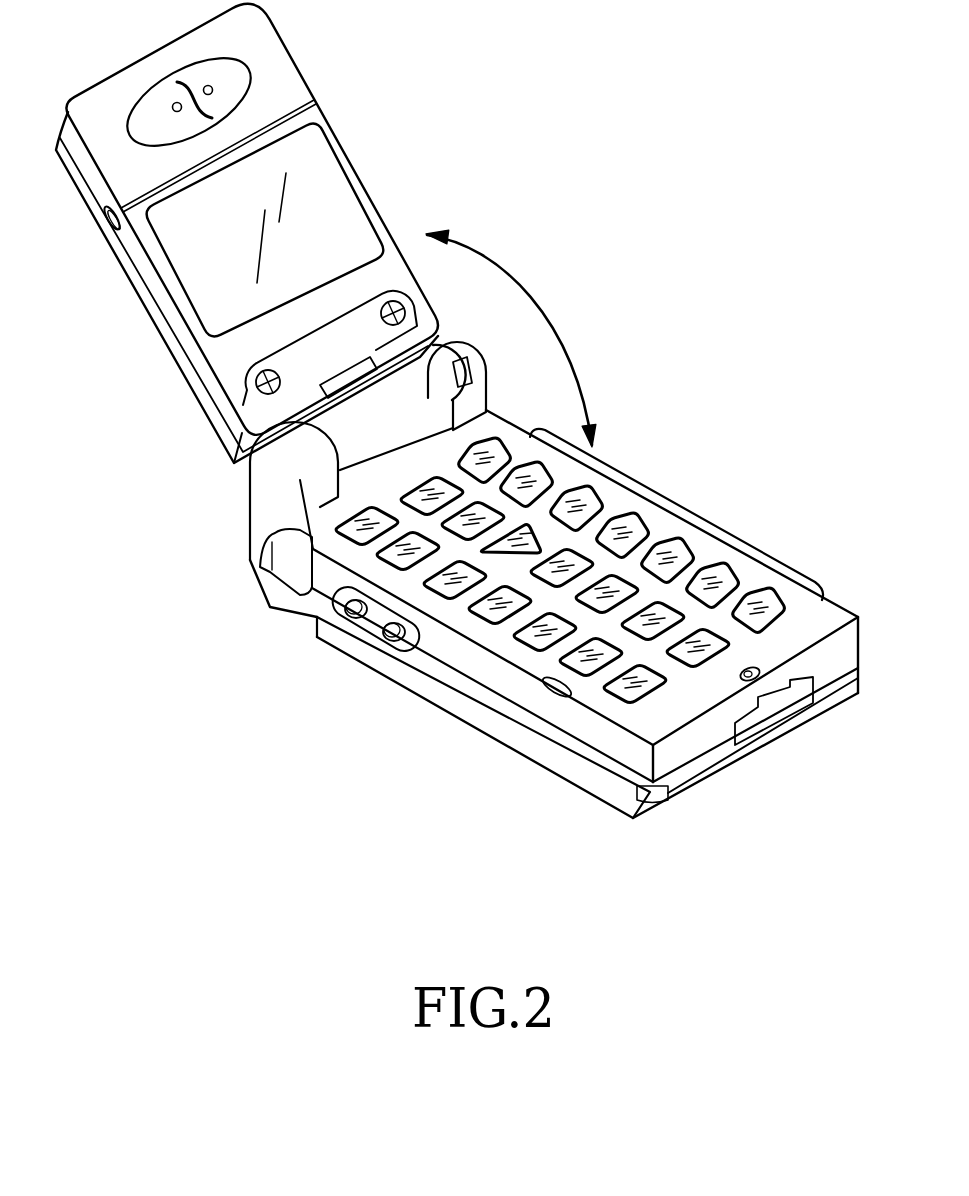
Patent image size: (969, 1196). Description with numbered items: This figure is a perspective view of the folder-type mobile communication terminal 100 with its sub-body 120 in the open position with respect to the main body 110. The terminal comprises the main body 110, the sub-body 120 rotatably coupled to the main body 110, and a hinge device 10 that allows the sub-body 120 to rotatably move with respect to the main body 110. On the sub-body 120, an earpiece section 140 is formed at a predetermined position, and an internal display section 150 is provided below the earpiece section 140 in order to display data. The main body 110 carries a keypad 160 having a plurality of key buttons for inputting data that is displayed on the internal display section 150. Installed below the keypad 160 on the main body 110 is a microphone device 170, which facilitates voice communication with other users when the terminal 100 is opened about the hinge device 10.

The folder-type mobile communication terminal 100 is at (682, 400).
The main body 110 is at (565, 772).
The sub-body 120 is at (150, 328).
The earpiece section 140 is at (236, 80).
The internal display section 150 is at (353, 222).
The hinge device 10 is at (425, 387).
The keypad 160 is at (676, 514).
The microphone device 170 is at (750, 668).